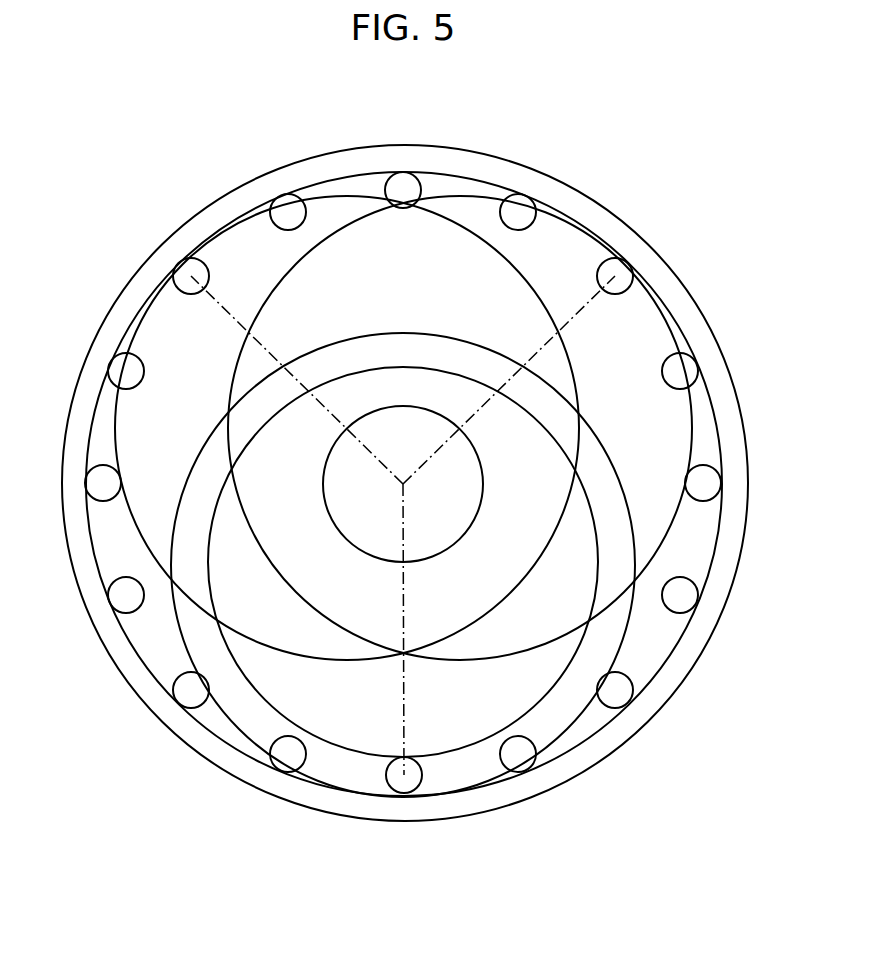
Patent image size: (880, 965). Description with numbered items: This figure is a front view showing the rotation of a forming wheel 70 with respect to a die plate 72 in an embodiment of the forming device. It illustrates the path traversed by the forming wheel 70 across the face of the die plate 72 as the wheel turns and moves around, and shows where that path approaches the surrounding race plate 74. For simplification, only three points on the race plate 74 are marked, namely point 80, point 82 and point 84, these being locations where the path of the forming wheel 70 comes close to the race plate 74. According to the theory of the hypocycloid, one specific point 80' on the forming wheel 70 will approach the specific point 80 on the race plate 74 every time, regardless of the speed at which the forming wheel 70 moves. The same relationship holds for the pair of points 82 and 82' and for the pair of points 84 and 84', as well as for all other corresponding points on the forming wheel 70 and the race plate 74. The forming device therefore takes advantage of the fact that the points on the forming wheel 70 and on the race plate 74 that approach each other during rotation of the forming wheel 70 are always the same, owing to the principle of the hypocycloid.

The forming wheel 70 is at (562, 242).
The die plate 72 is at (657, 642).
The race plate 74 is at (270, 190).
The point on the race plate 80 is at (126, 255).
The point on the forming wheel 80' is at (260, 309).
The point on the race plate 82 is at (679, 255).
The point on the forming wheel 82' is at (546, 309).
The point on the race plate 84 is at (375, 835).
The point on the forming wheel 84' is at (444, 699).